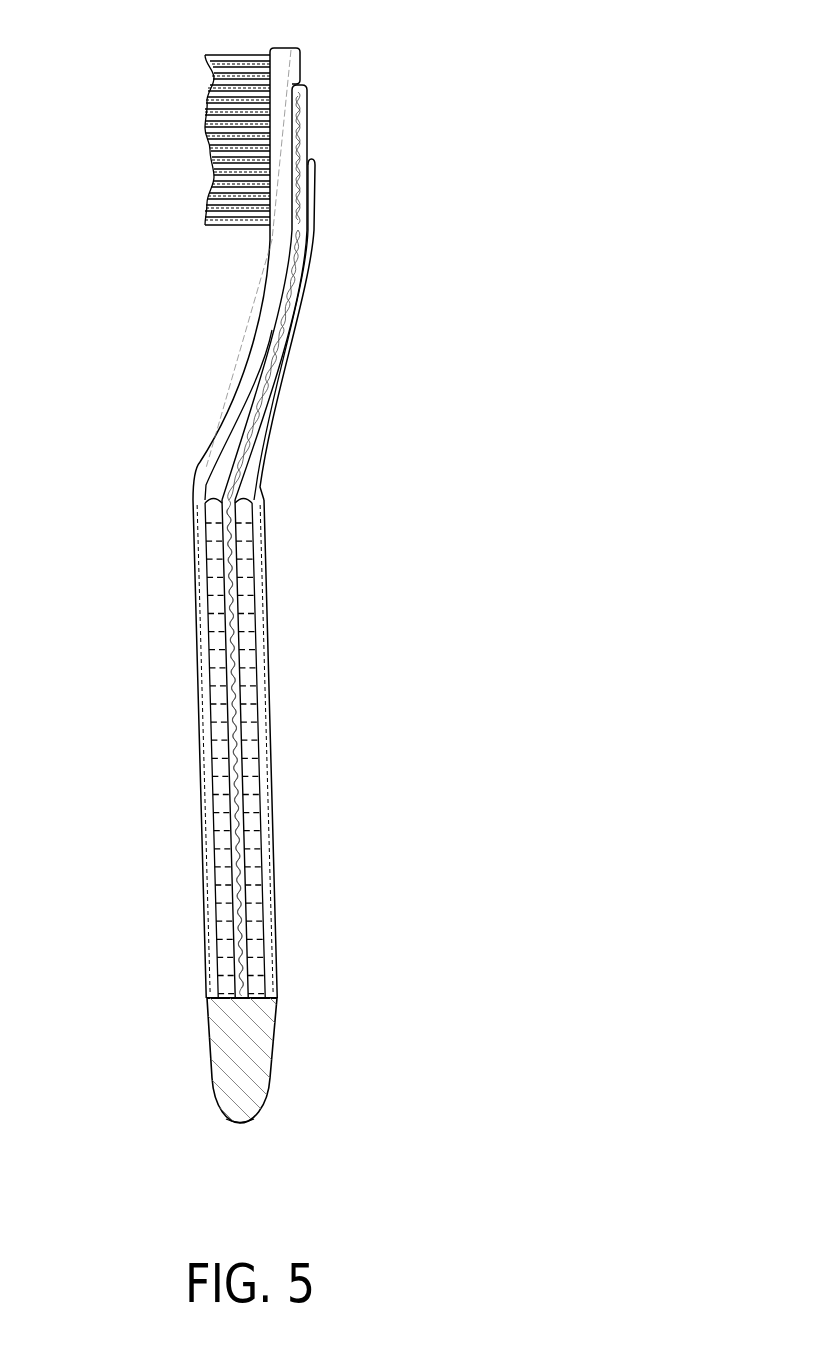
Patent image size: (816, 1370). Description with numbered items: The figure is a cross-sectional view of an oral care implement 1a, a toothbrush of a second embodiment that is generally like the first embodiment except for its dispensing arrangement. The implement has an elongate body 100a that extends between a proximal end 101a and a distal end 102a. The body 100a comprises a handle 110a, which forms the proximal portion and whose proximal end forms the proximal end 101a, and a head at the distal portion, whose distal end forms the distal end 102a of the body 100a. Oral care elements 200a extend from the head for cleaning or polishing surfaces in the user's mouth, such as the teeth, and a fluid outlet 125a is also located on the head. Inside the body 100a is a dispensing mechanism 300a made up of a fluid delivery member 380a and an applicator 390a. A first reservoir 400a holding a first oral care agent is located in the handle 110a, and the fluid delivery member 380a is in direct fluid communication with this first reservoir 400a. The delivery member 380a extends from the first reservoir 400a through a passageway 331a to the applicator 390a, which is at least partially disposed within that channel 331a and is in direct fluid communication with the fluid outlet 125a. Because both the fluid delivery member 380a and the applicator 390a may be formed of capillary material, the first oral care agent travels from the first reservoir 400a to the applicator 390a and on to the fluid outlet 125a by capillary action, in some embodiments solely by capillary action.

The oral care implement 1a is at (284, 720).
The body 100a is at (208, 460).
The proximal end 101a is at (240, 1125).
The distal end 102a is at (291, 48).
The handle 110a is at (232, 1035).
The fluid outlet 125a is at (307, 123).
The oral care elements 200a is at (222, 157).
The dispensing mechanism 300a is at (227, 568).
The passageway 331a is at (272, 348).
The fluid delivery member 380a is at (258, 387).
The applicator 390a is at (308, 143).
The first reservoir 400a is at (248, 842).